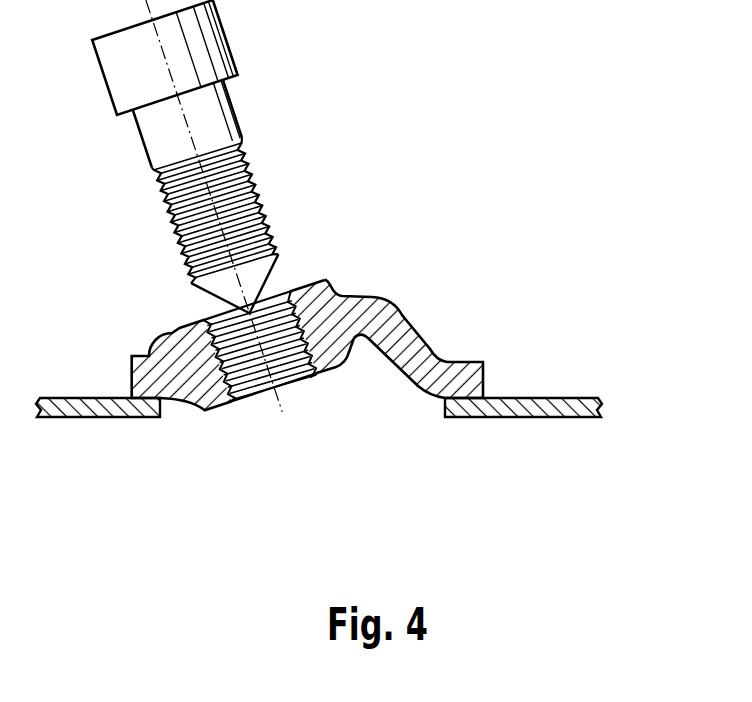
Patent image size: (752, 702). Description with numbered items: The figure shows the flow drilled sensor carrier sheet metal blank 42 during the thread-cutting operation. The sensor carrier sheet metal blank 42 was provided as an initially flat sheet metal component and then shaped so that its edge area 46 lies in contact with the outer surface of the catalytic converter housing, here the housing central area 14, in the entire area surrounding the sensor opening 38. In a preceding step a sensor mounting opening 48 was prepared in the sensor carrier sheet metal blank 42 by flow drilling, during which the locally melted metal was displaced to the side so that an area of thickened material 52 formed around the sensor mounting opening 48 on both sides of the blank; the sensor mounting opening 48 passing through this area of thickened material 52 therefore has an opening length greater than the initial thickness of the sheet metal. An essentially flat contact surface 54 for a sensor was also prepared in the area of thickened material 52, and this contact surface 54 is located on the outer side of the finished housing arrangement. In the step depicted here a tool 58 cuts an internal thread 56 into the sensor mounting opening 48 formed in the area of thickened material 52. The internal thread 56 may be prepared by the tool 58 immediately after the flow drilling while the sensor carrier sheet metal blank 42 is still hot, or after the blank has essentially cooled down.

The housing central area 14 is at (548, 405).
The sensor opening 38 is at (163, 403).
The sensor carrier sheet metal blank 42 is at (411, 326).
The edge area 46 is at (486, 364).
The sensor mounting opening 48 is at (253, 367).
The area of thickened material 52 is at (337, 360).
The contact surface 54 is at (304, 289).
The internal thread 56 is at (300, 347).
The tool 58 is at (220, 105).